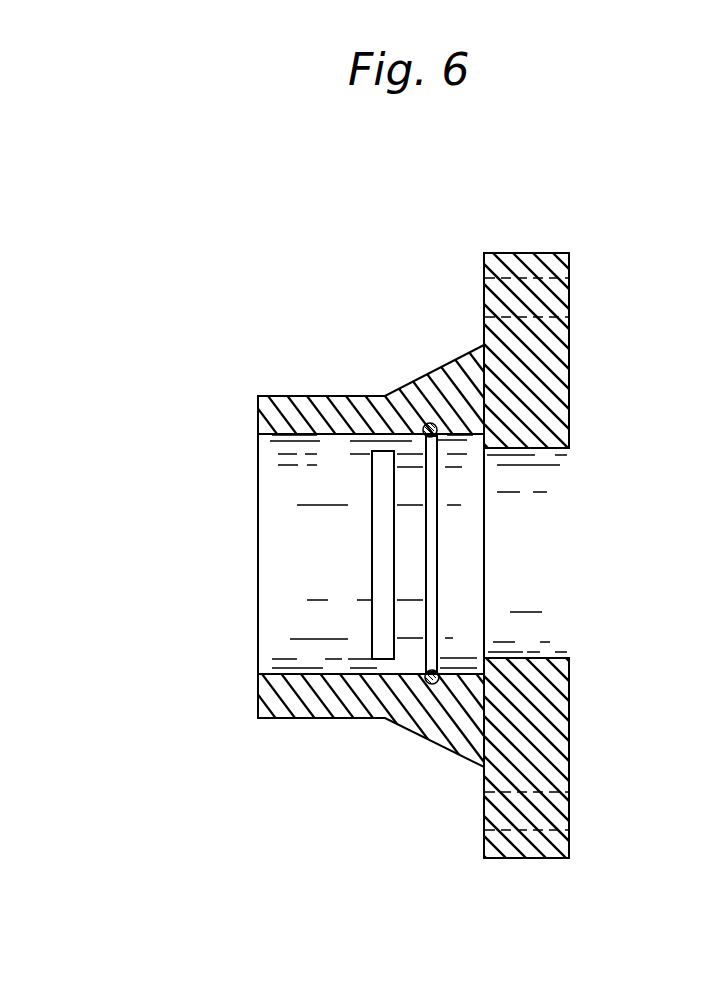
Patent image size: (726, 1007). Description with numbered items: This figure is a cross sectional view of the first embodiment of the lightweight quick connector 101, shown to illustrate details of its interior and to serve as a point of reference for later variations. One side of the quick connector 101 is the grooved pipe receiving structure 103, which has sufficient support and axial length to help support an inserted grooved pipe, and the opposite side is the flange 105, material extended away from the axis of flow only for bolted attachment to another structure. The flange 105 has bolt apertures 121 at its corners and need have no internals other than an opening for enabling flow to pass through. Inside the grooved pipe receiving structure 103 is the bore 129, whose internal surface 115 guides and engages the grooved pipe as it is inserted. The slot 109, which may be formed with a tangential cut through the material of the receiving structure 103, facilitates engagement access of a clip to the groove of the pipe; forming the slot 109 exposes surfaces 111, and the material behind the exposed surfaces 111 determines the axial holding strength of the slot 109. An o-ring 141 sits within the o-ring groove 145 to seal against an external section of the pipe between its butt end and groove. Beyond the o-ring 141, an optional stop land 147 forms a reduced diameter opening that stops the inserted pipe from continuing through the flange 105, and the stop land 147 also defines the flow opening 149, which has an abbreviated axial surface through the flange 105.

The quick connector 101 is at (512, 215).
The grooved pipe receiving structure 103 is at (259, 377).
The flange 105 is at (563, 252).
The slot 109 is at (377, 533).
The exposed surfaces 111 is at (348, 414).
The internal surface 115 is at (375, 434).
The bolt apertures 121 is at (567, 297).
The bore 129 is at (287, 638).
The o-ring 141 is at (433, 672).
The o-ring groove 145 is at (428, 423).
The stop land 147 is at (486, 445).
The flow opening 149 is at (543, 658).